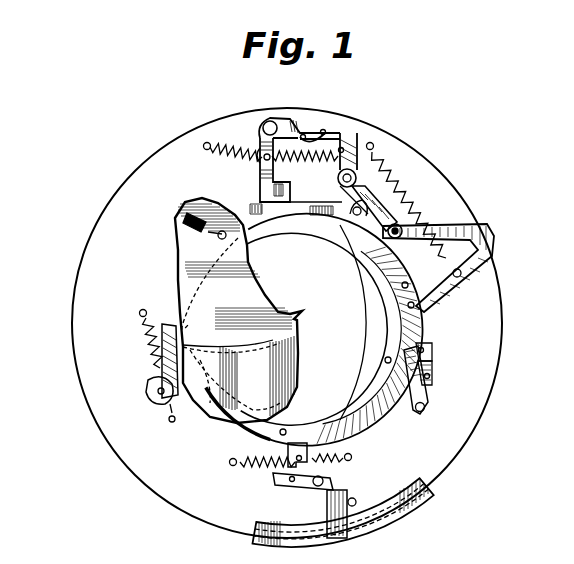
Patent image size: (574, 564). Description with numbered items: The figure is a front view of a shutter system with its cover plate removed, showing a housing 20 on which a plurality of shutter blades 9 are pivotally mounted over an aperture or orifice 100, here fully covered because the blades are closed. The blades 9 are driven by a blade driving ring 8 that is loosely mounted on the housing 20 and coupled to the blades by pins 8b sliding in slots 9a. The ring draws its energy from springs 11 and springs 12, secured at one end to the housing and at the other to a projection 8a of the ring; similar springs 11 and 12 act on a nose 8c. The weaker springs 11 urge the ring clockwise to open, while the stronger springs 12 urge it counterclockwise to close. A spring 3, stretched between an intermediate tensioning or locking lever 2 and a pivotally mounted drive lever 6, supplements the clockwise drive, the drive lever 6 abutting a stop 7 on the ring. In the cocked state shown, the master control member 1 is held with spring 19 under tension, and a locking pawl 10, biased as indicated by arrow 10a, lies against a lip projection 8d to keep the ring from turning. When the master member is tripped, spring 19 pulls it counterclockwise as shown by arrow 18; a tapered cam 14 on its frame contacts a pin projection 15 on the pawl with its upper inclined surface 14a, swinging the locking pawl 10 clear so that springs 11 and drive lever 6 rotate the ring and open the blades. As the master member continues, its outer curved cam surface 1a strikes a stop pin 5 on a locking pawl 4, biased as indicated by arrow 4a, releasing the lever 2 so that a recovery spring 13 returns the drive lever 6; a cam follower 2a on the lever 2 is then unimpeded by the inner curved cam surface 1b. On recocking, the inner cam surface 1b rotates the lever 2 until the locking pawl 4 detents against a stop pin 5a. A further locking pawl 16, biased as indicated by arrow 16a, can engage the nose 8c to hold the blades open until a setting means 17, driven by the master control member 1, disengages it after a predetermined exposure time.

The master control member 1 is at (490, 262).
The outer curved cam surface 1a is at (446, 228).
The inner curved cam surface 1b is at (453, 274).
The intermediate tensioning or locking lever 2 is at (388, 175).
The cam follower 2a is at (398, 238).
The spring 3 is at (307, 160).
The locking pawl 4 is at (306, 108).
The arrow 4a is at (277, 106).
The stop pin 5 is at (324, 130).
The stop pin 5a is at (324, 133).
The drive lever 6 is at (258, 168).
The stop 7 is at (273, 226).
The blade driving ring 8 is at (306, 235).
The projection 8a is at (170, 412).
The pins 8b is at (185, 218).
The nose 8c is at (340, 455).
The lip projection 8d is at (432, 346).
The shutter blades 9 is at (292, 306).
The slots 9a is at (208, 232).
The locking pawl 10 is at (433, 364).
The arrow 10a is at (432, 434).
The springs 11 is at (147, 340).
The springs 12 is at (157, 402).
The recovery spring 13 is at (247, 147).
The tapered cam 14 is at (408, 412).
The upper inclined surface 14a is at (418, 430).
The pin projection 15 is at (434, 378).
The locking pawl 16 is at (312, 505).
The arrow 16a is at (322, 500).
The setting means 17 is at (352, 532).
The arrow 18 is at (490, 200).
The spring 19 is at (408, 196).
The housing 20 is at (74, 273).
The aperture or orifice 100 is at (274, 322).